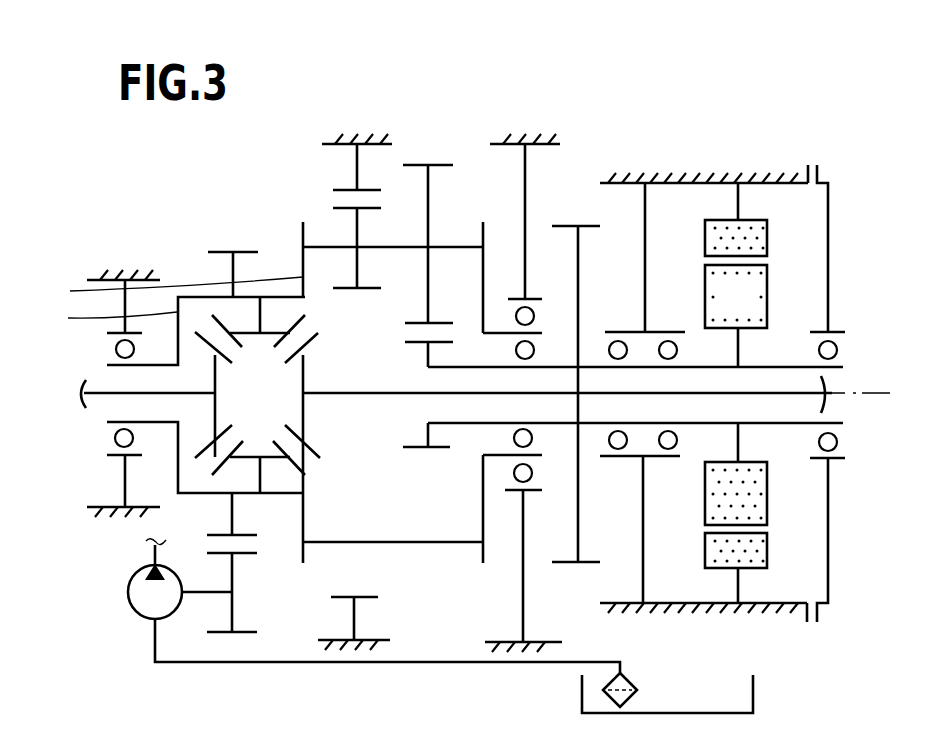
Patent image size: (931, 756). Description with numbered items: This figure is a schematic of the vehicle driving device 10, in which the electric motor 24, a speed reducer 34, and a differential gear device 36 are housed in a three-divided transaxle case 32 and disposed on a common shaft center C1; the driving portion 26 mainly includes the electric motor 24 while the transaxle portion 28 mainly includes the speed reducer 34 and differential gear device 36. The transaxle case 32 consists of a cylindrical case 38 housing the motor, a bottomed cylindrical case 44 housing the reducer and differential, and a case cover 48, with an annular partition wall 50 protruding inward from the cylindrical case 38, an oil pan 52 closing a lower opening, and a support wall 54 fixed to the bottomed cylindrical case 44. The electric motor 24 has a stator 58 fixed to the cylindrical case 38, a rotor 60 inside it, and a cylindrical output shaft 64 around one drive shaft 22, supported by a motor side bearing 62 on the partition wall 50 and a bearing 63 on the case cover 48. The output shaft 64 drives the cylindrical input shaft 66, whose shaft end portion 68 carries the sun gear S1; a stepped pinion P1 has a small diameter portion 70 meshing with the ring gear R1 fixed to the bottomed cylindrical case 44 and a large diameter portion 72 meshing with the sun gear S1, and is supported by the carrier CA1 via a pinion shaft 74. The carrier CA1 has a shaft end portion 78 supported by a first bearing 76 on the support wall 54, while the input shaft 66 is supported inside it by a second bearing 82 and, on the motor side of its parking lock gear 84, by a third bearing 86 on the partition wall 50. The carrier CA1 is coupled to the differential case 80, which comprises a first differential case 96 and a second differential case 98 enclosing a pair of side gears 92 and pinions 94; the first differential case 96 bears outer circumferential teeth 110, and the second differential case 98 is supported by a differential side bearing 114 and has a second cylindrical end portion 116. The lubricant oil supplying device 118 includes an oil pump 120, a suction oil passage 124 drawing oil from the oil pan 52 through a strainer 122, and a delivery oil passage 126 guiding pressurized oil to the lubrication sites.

The vehicle driving device 10 is at (685, 57).
The drive shaft 22 is at (88, 410).
The electric motor 24 is at (779, 547).
The driving portion 26 is at (719, 104).
The transaxle portion 28 is at (568, 92).
The transaxle case 32 is at (425, 145).
The speed reducer 34 is at (435, 555).
The differential gear device 36 is at (189, 280).
The cylindrical case 38 is at (692, 180).
The bottomed cylindrical case 44 is at (124, 275).
The case cover 48 is at (829, 258).
The partition wall 50 is at (645, 210).
The oil pan 52 is at (758, 685).
The support wall 54 is at (523, 583).
The stator 58 is at (766, 237).
The rotor 60 is at (766, 285).
The motor side bearing 62 is at (666, 345).
The bearing 63 is at (837, 442).
The output shaft 64 is at (722, 368).
The input shaft 66 is at (590, 365).
The shaft end portion 68 is at (453, 420).
The small diameter portion 70 is at (345, 292).
The large diameter portion 72 is at (416, 163).
The pinion shaft 74 is at (393, 250).
The first bearing 76 is at (532, 476).
The shaft end portion 78 is at (500, 458).
The differential case 80 is at (40, 278).
The second bearing 82 is at (512, 436).
The parking lock gear 84 is at (560, 222).
The third bearing 86 is at (618, 449).
The side gear 92 is at (228, 378).
The pinion 94 is at (250, 338).
The first differential case 96 is at (171, 289).
The second differential case 98 is at (108, 320).
The outer circumferential teeth 110 is at (253, 540).
The differential side bearing 114 is at (116, 440).
The second cylindrical end portion 116 is at (117, 372).
The lubricant oil supplying device 118 is at (60, 640).
The oil pump 120 is at (132, 592).
The strainer 122 is at (640, 683).
The suction oil passage 124 is at (155, 640).
The delivery oil passage 126 is at (152, 555).
The shaft center C1 is at (872, 392).
The carrier CA1 is at (303, 259).
The stepped pinion P1 is at (429, 209).
The ring gear R1 is at (342, 197).
The sun gear S1 is at (421, 450).